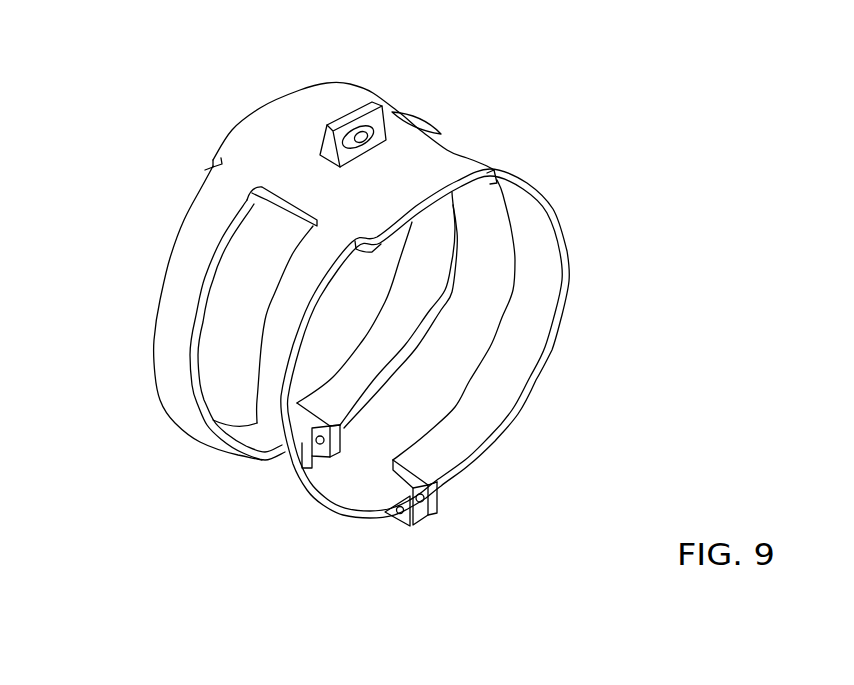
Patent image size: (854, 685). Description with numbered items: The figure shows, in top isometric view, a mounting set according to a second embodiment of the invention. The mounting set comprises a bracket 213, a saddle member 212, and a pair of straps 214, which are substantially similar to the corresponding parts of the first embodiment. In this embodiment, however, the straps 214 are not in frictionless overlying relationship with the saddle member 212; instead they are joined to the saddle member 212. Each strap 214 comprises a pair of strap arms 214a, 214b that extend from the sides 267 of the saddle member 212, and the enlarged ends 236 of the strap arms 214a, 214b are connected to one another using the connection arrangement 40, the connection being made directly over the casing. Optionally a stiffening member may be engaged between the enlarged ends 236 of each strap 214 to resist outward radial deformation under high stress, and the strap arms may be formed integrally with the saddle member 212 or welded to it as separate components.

The saddle member 212 is at (463, 167).
The bracket 213 is at (347, 112).
The straps 214 is at (166, 408).
The strap arm 214a is at (177, 307).
The strap arm 214b is at (445, 223).
The enlarged ends 236 is at (310, 450).
The connecting arrangement 40 is at (327, 465).
The sides 267 is at (428, 125).